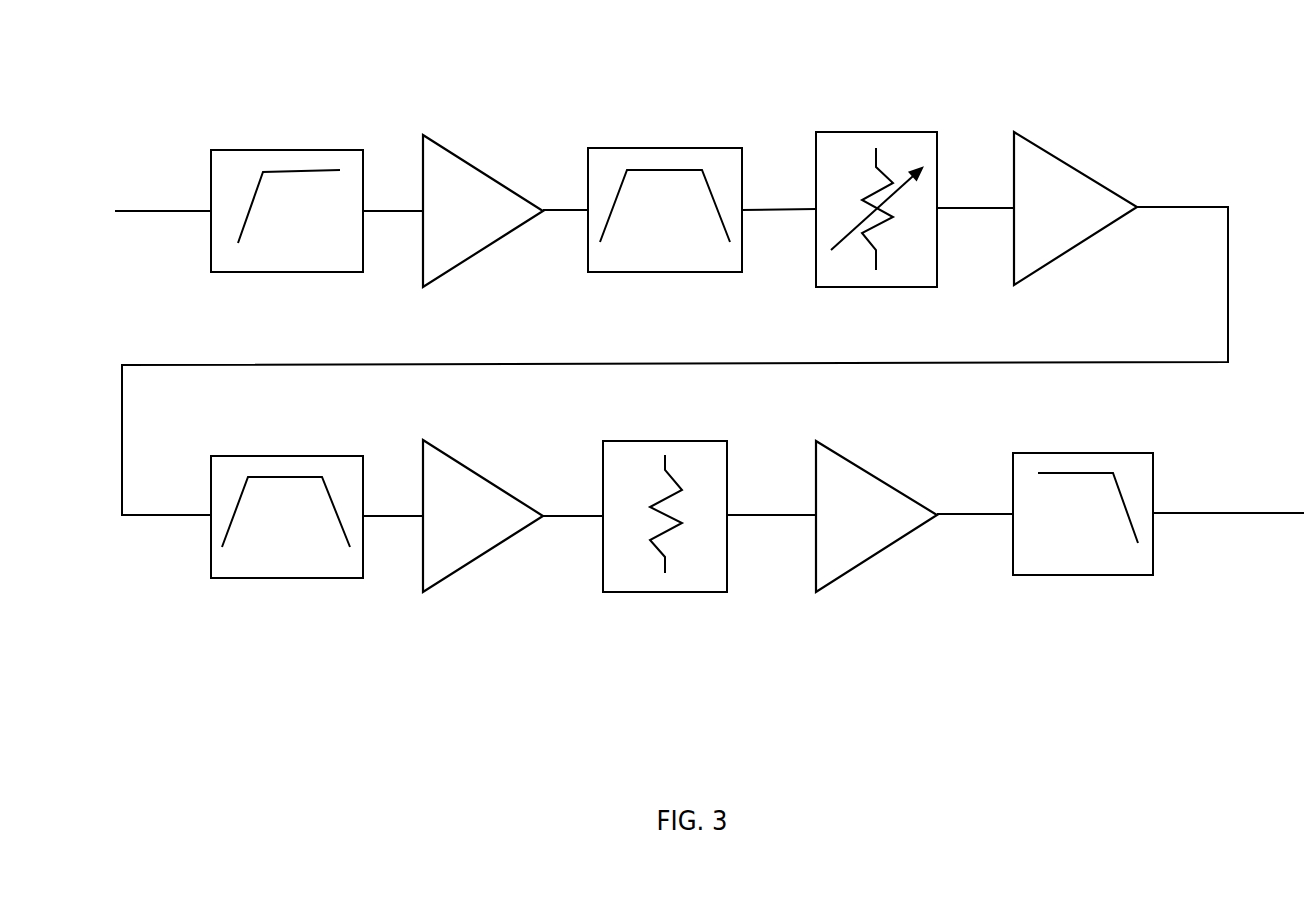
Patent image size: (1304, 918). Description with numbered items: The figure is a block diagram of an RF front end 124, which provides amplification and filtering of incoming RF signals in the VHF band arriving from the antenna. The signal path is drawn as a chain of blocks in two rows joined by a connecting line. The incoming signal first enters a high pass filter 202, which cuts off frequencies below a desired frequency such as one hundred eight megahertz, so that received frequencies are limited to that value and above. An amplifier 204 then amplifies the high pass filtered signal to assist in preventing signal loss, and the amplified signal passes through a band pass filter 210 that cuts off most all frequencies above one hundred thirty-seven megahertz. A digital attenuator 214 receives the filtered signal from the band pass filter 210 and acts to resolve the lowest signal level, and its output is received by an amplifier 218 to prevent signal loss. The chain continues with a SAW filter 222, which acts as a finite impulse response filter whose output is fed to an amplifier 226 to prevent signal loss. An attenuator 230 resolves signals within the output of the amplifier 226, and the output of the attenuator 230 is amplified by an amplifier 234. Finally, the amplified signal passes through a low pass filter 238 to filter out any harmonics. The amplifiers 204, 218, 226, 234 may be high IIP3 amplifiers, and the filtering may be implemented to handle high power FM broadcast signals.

The RF front end 124 is at (188, 644).
The high pass filter 202 is at (231, 127).
The amplifier 204 is at (487, 268).
The band pass filter 210 is at (644, 125).
The digital attenuator 214 is at (899, 305).
The amplifier 218 is at (1098, 265).
The SAW filter 222 is at (272, 603).
The amplifier 226 is at (487, 583).
The attenuator 230 is at (685, 602).
The amplifier 234 is at (899, 563).
The low pass filter 238 is at (1099, 603).